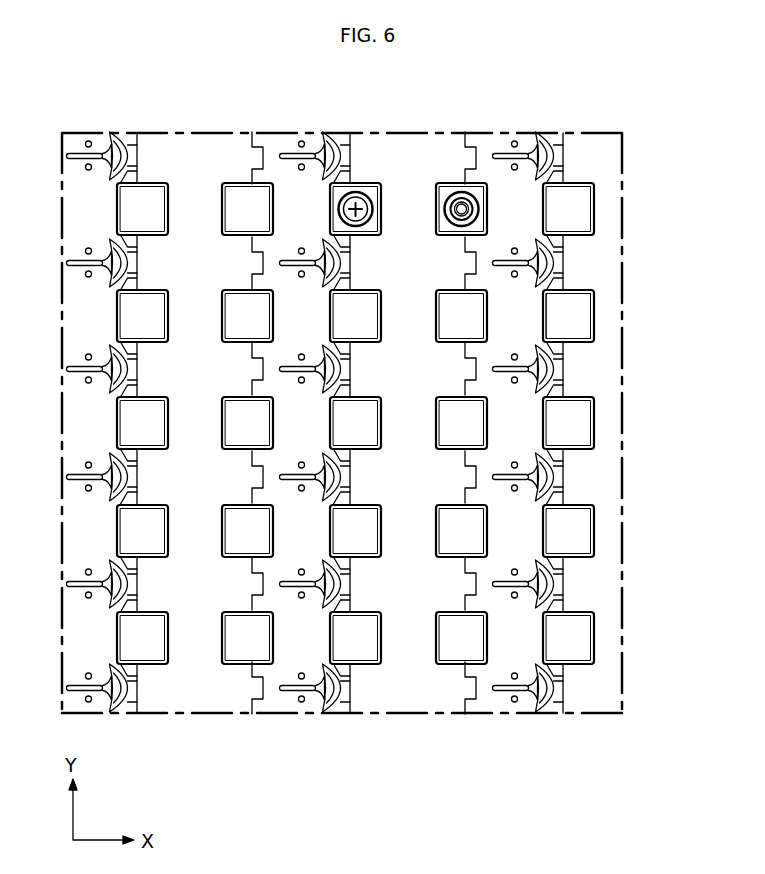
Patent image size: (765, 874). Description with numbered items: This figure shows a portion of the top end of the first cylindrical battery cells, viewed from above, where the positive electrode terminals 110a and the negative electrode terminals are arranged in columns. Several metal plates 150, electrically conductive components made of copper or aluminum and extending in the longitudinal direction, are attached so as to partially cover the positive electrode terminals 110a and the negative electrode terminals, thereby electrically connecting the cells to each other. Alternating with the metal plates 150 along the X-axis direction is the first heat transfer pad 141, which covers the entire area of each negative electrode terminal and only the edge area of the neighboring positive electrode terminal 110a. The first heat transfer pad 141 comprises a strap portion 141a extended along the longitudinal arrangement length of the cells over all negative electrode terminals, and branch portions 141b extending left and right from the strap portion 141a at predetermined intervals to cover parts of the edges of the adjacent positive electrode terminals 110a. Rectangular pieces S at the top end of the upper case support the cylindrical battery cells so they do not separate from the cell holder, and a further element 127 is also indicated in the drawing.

The metal plate 150 is at (85, 135).
The first heat transfer pad 141 is at (192, 158).
The rectangular piece S is at (252, 200).
The positive electrode terminal 110a is at (548, 264).
The sample holder cell 127 is at (580, 316).
The strap portion 141a is at (197, 690).
The branch portion 141b is at (132, 690).